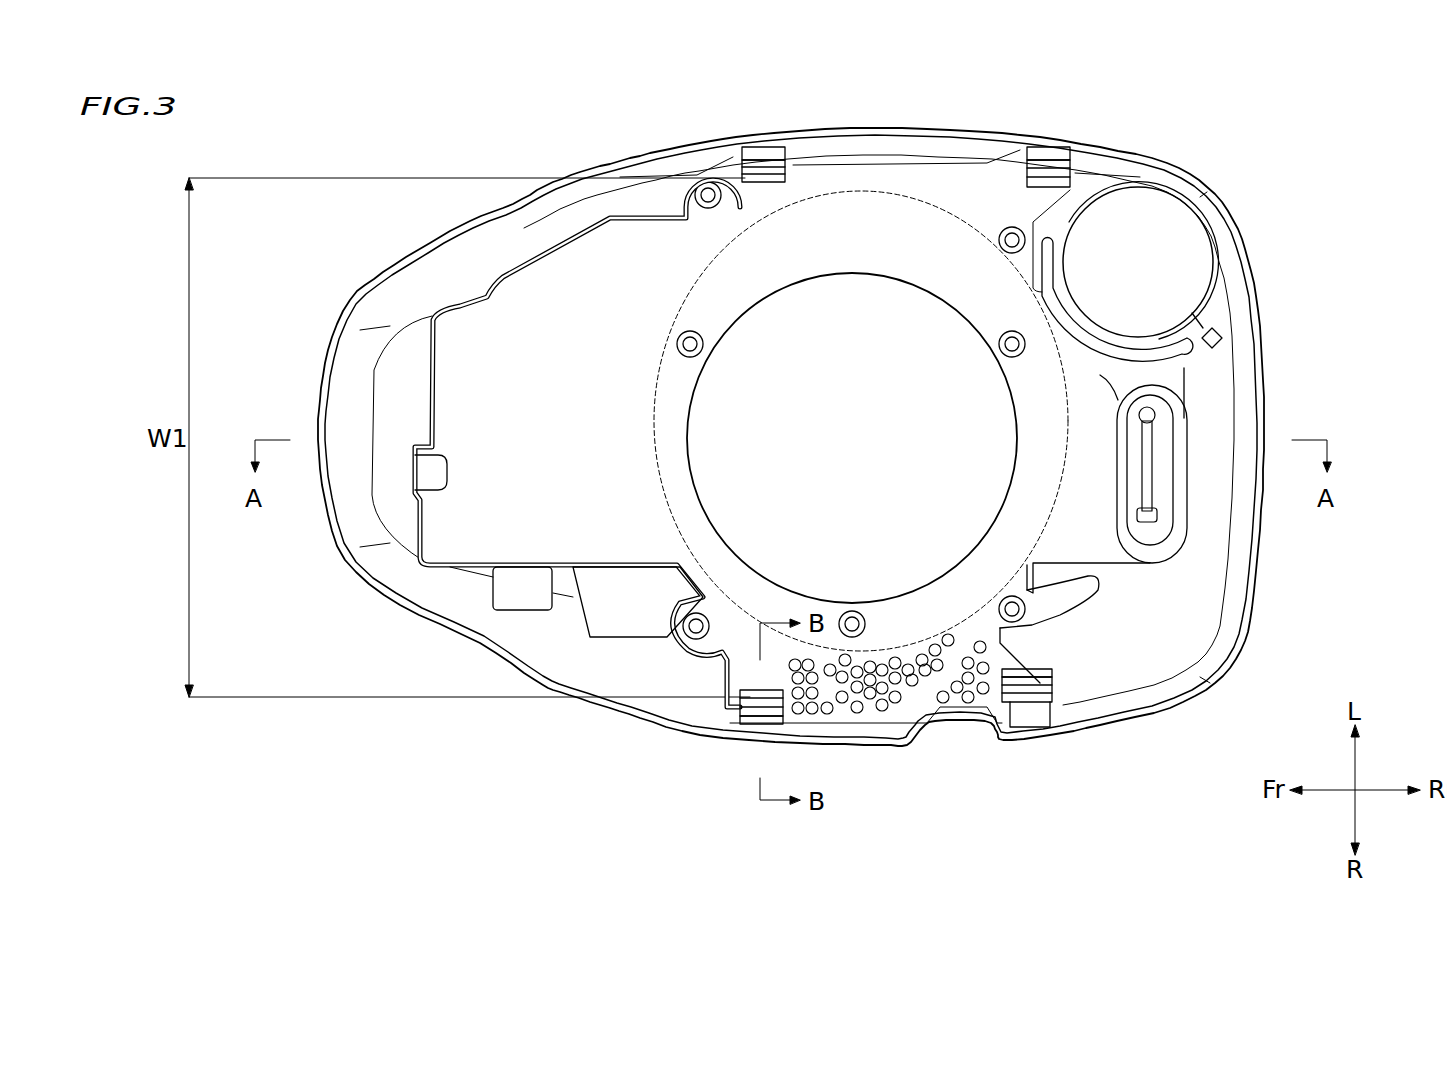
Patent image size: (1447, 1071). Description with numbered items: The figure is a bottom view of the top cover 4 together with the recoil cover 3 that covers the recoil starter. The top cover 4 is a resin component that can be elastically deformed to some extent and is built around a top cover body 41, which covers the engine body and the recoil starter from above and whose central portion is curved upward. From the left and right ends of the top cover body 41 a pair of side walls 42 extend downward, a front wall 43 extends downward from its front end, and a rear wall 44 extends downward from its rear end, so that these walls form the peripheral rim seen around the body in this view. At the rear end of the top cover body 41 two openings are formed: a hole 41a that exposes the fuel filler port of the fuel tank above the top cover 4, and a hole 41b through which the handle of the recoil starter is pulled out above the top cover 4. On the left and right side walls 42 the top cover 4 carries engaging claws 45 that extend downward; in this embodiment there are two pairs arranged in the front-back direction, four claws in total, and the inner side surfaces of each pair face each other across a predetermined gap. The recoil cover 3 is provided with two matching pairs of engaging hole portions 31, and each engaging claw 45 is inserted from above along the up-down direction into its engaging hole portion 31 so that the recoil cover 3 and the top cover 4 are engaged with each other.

The recoil cover 3 is at (530, 262).
The top cover 4 is at (1263, 300).
The engaging hole portion 31 is at (797, 150).
The top cover body 41 is at (1160, 598).
The hole 41a is at (1150, 213).
The hole 41b is at (1060, 612).
The side wall 42 is at (915, 130).
The front wall 43 is at (320, 355).
The rear wall 44 is at (1268, 385).
The engaging claw 45 is at (752, 150).